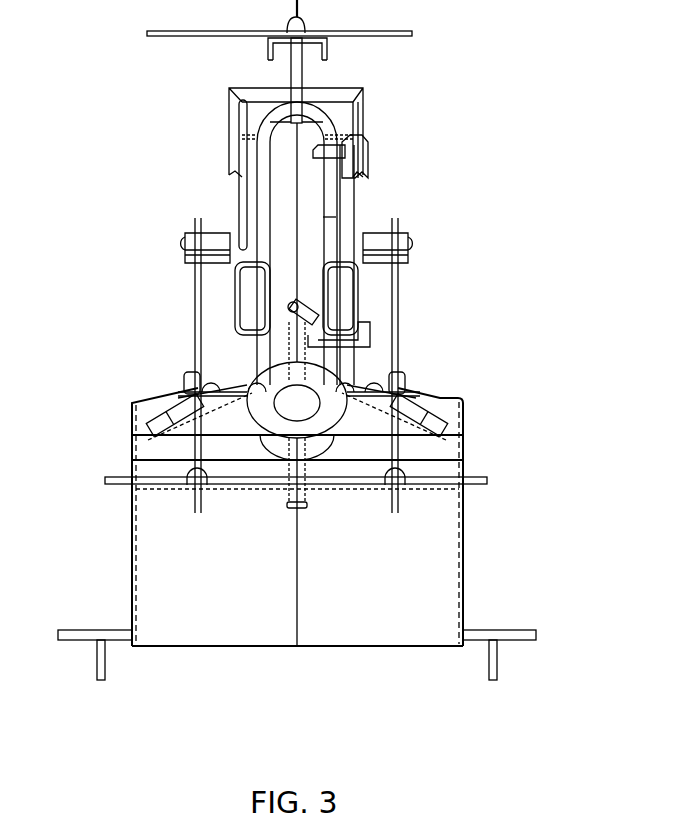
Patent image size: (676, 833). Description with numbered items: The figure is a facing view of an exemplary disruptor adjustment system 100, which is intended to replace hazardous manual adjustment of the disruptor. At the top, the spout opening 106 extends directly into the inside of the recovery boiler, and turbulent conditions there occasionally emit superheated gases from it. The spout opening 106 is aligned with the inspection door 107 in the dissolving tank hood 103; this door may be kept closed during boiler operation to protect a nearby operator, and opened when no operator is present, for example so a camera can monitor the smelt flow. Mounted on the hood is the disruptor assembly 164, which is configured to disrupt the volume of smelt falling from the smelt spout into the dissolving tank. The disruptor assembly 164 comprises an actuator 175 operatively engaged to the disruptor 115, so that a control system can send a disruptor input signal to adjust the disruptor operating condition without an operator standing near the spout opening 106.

The disruptor adjustment system 100 is at (283, 340).
The dissolving tank hood 103 is at (437, 555).
The spout opening 106 is at (307, 212).
The inspection door 107 is at (237, 292).
The disruptor 115 is at (238, 348).
The disruptor assembly 164 is at (447, 334).
The actuator 175 is at (322, 425).